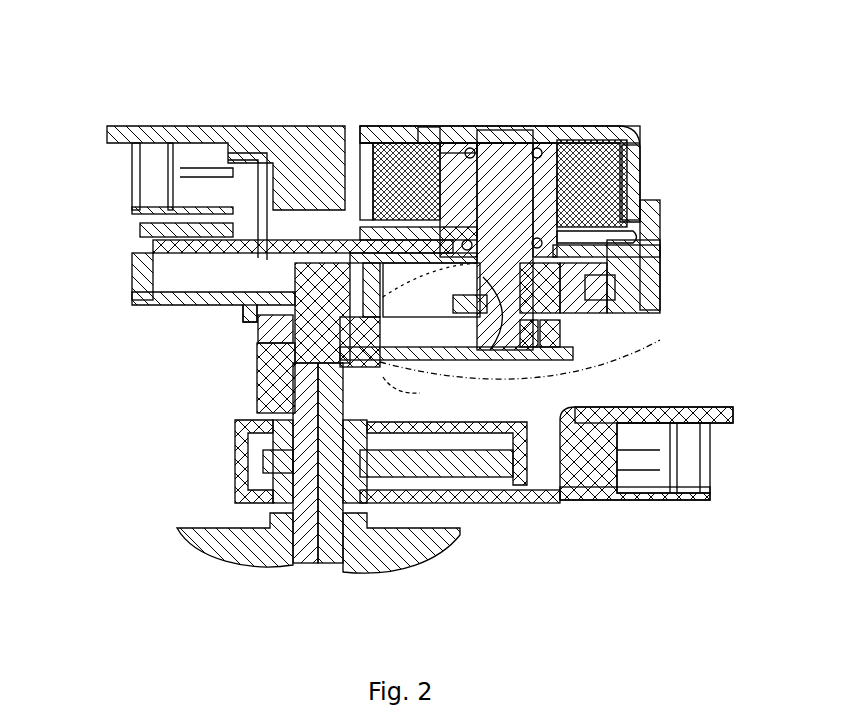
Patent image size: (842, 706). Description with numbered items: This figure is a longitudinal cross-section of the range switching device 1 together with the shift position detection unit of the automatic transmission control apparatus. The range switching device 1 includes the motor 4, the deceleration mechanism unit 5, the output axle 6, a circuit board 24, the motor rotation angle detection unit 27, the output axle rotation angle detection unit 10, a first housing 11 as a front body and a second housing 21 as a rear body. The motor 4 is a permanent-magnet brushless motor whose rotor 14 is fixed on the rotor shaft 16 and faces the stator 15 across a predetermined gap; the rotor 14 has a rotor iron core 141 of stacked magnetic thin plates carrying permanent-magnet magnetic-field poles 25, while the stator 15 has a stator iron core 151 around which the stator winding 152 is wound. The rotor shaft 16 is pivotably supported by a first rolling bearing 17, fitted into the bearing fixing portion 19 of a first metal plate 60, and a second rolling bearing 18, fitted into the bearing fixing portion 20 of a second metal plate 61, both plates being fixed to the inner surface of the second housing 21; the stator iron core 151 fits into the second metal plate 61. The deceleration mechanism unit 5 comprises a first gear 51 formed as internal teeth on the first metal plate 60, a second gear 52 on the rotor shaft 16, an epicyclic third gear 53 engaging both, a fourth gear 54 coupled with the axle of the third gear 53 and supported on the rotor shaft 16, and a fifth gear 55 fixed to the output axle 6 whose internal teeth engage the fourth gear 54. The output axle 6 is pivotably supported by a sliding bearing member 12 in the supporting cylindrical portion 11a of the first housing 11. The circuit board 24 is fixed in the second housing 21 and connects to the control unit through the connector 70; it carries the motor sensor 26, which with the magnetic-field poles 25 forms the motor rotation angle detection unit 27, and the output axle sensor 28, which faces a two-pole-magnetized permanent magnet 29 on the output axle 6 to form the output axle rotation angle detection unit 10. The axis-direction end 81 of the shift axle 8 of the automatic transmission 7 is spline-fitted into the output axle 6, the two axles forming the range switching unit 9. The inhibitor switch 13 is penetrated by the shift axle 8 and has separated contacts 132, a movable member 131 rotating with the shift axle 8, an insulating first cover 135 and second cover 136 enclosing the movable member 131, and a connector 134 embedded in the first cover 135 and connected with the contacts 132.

The range switching device 1 is at (167, 117).
The motor 4 is at (620, 130).
The deceleration mechanism unit 5 is at (637, 330).
The output axle 6 is at (258, 345).
The automatic transmission 7 is at (193, 530).
The shift axle 8 is at (325, 560).
The range switching unit 9 is at (380, 377).
The output axle rotation angle detection unit 10 is at (330, 137).
The first housing 11 is at (133, 313).
The supporting cylindrical portion 11a is at (383, 400).
The sliding bearing member 12 is at (253, 380).
The inhibitor switch 13 is at (527, 510).
The rotor 14 is at (580, 140).
The stator 15 is at (645, 170).
The rotor shaft 16 is at (507, 133).
The first rolling bearing 17 is at (620, 240).
The second rolling bearing 18 is at (467, 133).
The bearing fixing portion 19 is at (575, 248).
The bearing fixing portion 20 is at (567, 133).
The second housing 21 is at (137, 242).
The circuit board 24 is at (133, 252).
The magnetic-field poles 25 is at (427, 133).
The motor sensor 26 is at (360, 133).
The motor rotation angle detection unit 27 is at (410, 140).
The output axle sensor 28 is at (300, 263).
The permanent magnet 29 is at (247, 303).
The first gear 51 is at (640, 293).
The second gear 52 is at (490, 350).
The third gear 53 is at (602, 290).
The fourth gear 54 is at (483, 350).
The fifth gear 55 is at (560, 355).
The first metal plate 60 is at (643, 278).
The second metal plate 61 is at (487, 133).
The connector 70 is at (203, 178).
The axis-direction end 81 is at (293, 387).
The movable member 131 is at (475, 478).
The contacts 132 is at (447, 500).
The connector 134 is at (643, 463).
The first cover 135 is at (560, 505).
The second cover 136 is at (687, 413).
The rotor iron core 141 is at (450, 180).
The stator iron core 151 is at (395, 185).
The stator winding 152 is at (418, 160).